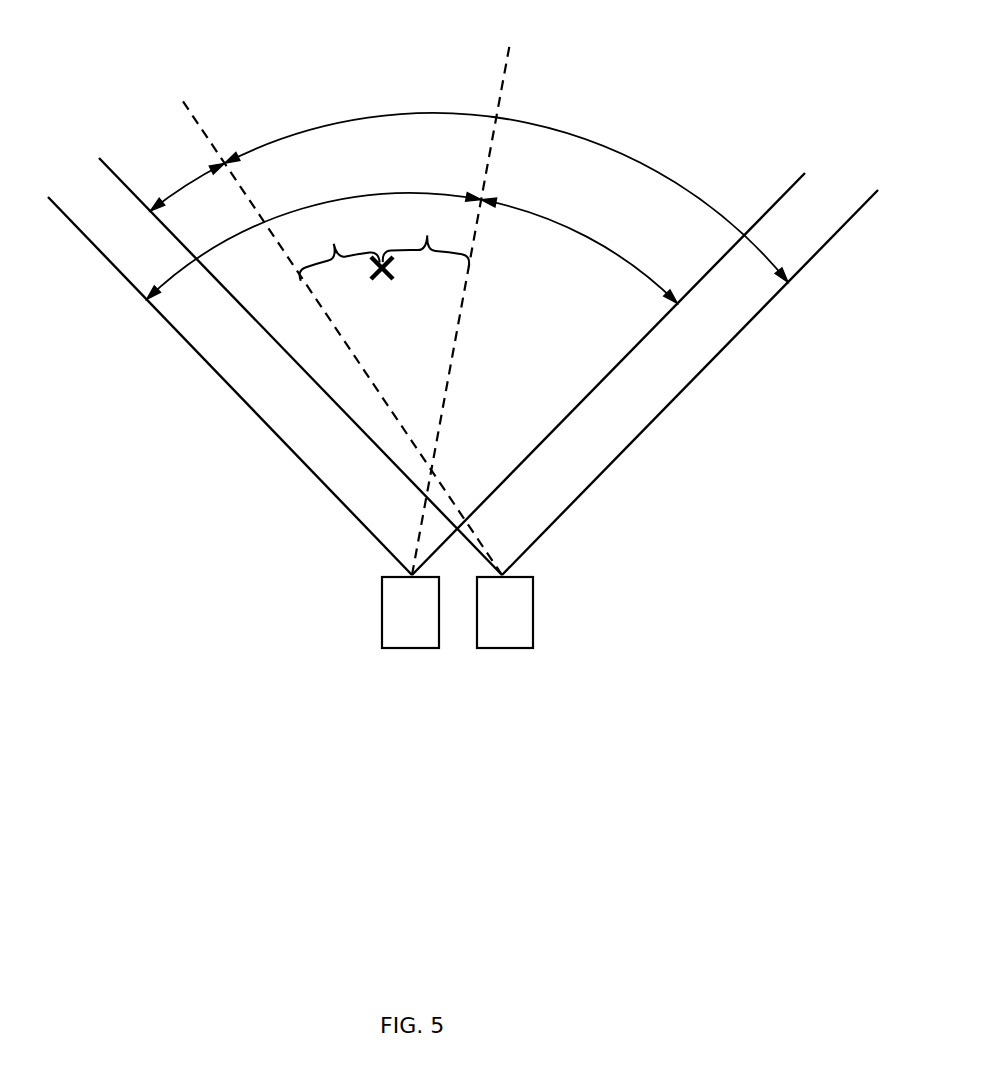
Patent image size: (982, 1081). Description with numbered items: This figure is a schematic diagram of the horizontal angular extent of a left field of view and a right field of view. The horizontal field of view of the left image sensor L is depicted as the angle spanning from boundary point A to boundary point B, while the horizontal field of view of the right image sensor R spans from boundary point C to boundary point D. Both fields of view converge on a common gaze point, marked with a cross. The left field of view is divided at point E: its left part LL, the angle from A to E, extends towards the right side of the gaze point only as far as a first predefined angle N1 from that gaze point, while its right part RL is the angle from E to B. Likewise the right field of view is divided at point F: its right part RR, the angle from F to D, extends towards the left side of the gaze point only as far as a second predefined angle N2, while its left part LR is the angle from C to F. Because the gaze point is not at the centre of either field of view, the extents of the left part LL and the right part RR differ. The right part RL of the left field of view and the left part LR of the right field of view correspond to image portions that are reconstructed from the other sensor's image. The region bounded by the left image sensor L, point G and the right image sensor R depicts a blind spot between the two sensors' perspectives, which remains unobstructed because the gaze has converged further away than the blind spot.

The left boundary point of left field of view A is at (227, 372).
The right boundary point of left field of view B is at (608, 363).
The left boundary point of right field of view C is at (300, 353).
The right boundary point of right field of view D is at (692, 368).
The dividing point of left field of view E is at (468, 298).
The dividing point of right field of view F is at (339, 323).
The vertex of blind spot region G is at (458, 453).
The left image sensor L is at (410, 612).
The right image sensor R is at (505, 612).
The left part of right field of view LR is at (187, 183).
The left part of left field of view LL is at (314, 246).
The right part of right field of view RR is at (506, 197).
The right part of left field of view RL is at (579, 250).
The first predefined angle N1 is at (426, 242).
The second predefined angle N2 is at (340, 251).